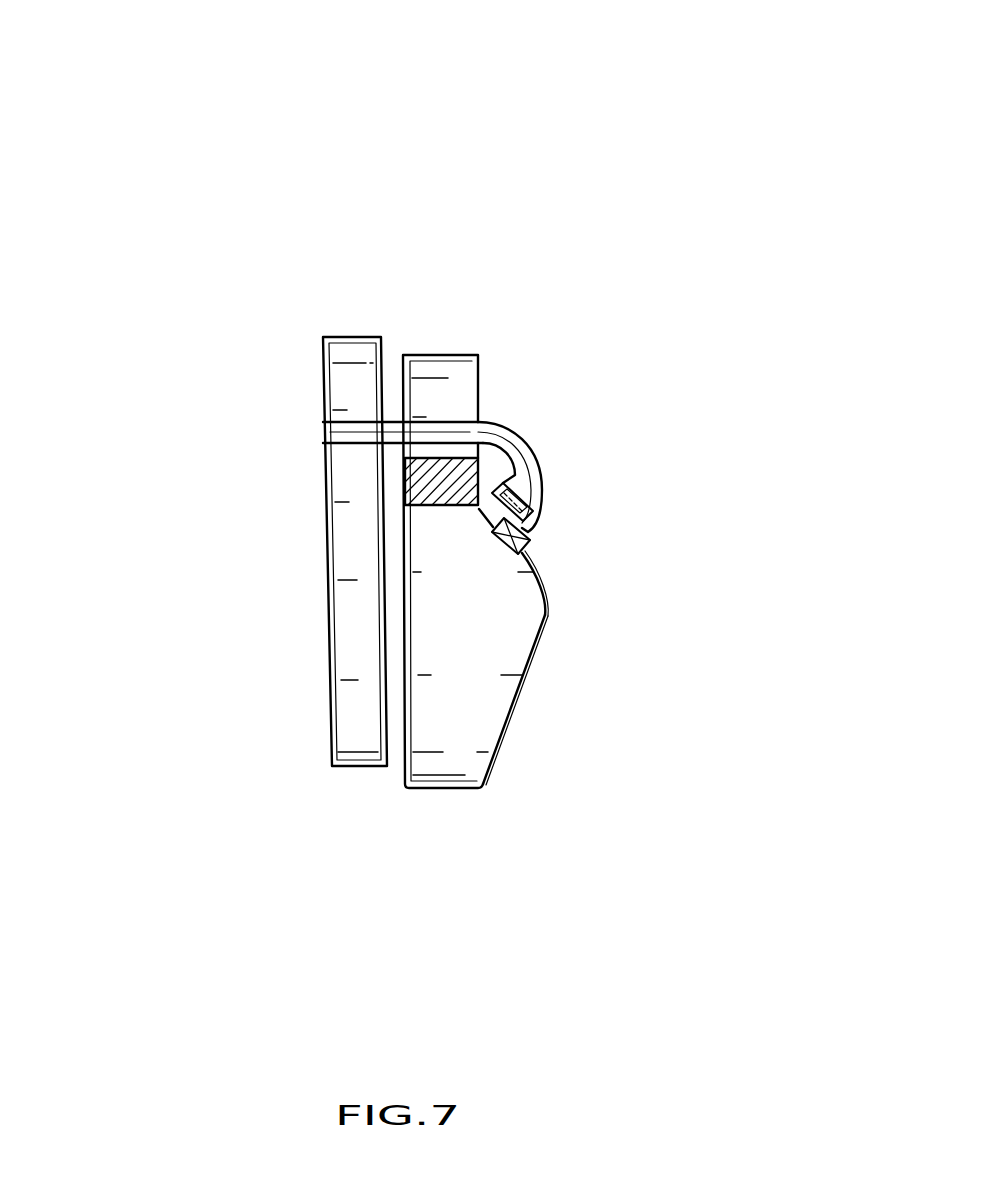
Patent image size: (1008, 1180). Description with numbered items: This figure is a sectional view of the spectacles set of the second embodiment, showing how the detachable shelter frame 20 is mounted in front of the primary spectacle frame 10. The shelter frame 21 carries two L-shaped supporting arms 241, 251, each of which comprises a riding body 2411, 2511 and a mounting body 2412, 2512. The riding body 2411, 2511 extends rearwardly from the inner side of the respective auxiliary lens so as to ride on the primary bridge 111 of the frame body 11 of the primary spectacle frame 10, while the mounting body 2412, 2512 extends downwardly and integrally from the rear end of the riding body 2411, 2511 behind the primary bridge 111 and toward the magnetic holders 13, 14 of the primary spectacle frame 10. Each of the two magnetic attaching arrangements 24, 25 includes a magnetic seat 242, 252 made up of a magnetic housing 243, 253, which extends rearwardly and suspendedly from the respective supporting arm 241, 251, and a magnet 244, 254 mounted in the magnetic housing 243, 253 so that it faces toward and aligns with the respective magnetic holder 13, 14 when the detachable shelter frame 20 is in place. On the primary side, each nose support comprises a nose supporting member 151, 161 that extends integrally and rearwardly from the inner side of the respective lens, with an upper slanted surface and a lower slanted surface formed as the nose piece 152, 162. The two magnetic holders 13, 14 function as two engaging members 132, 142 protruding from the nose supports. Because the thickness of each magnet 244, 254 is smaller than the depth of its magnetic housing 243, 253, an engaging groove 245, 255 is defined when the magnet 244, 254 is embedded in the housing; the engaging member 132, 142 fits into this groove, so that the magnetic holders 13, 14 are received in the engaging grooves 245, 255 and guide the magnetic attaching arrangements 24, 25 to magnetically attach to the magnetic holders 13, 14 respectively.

The primary spectacle frame 10 is at (748, 770).
The plate of base member 11 is at (366, 639).
The primary bridge 111 is at (440, 482).
The magnetic holder 13 is at (602, 666).
The magnetic holder 14 is at (602, 666).
The engaging member 132 is at (631, 533).
The engaging member 142 is at (631, 533).
The nose supporting member 151 is at (603, 622).
The nose supporting member 161 is at (505, 628).
The nose piece 152 is at (589, 719).
The nose piece 162 is at (513, 725).
The detachable shelter frame 20 is at (260, 528).
The shelter frame 21 is at (363, 745).
The magnetic attaching arrangement 24 is at (589, 272).
The magnetic attaching arrangement 25 is at (589, 272).
The supporting arm 241 is at (491, 305).
The supporting arm 251 is at (491, 305).
The riding body 2411 is at (396, 305).
The riding body 2511 is at (367, 432).
The mounting body 2412 is at (538, 369).
The mounting body 2512 is at (485, 462).
The magnetic seat 242 is at (673, 382).
The magnetic seat 252 is at (673, 382).
The magnetic housing 243 is at (625, 447).
The magnetic housing 253 is at (538, 495).
The magnet 244 is at (634, 470).
The magnet 254 is at (527, 513).
The engaging groove 245 is at (631, 518).
The engaging groove 255 is at (528, 532).